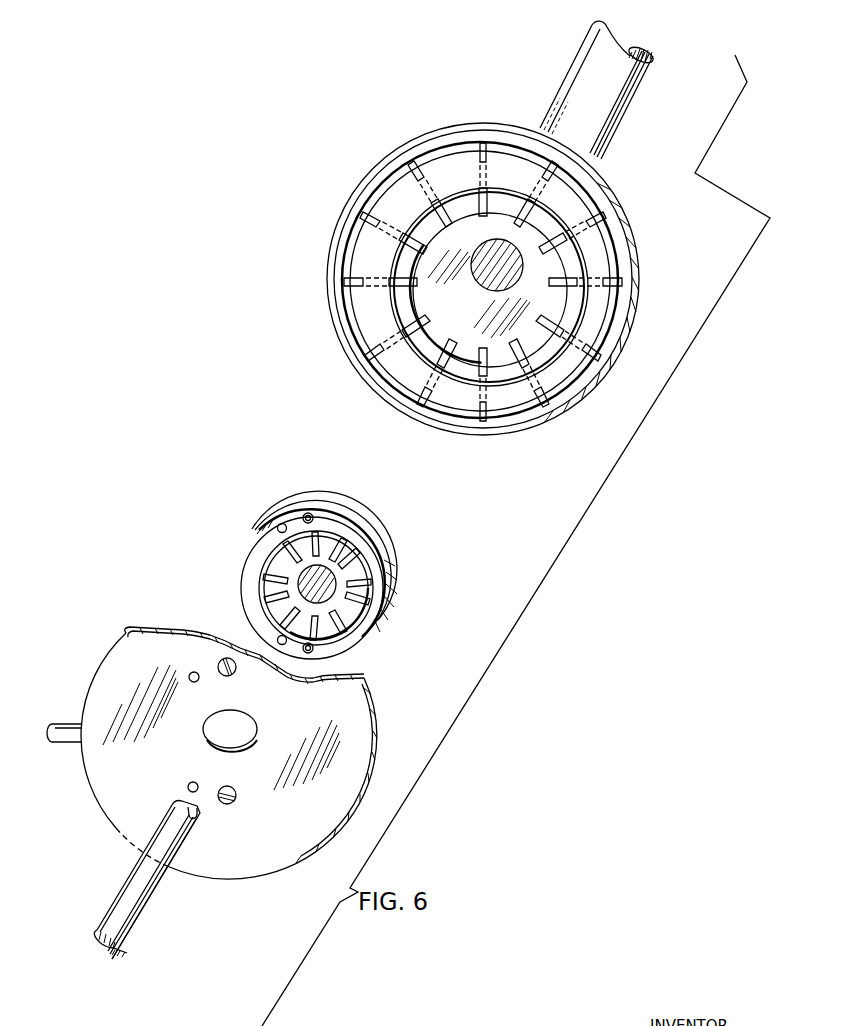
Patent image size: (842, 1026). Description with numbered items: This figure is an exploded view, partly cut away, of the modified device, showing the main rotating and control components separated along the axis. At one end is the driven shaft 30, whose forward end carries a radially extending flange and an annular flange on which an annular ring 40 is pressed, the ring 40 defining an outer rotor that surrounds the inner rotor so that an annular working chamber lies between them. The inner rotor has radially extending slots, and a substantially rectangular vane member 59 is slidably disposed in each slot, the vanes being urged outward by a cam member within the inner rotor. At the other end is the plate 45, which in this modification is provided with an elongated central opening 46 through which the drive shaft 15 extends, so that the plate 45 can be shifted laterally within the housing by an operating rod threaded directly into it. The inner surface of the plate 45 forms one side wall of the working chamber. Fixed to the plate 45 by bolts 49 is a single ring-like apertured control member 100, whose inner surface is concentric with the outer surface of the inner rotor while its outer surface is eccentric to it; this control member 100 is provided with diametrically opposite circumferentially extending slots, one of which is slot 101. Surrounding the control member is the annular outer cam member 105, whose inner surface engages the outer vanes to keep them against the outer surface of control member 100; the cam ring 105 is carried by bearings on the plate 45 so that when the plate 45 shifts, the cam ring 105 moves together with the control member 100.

The driven shaft 30 is at (641, 85).
The outer cam member 105 is at (625, 270).
The annular ring 40 is at (567, 373).
The circumferentially extending slot 101 is at (377, 530).
The ring-like apertured control member 100 is at (388, 560).
The vane member 59 is at (355, 612).
The bolts 49 is at (235, 668).
The central opening 46 is at (241, 752).
The plate 45 is at (327, 830).
The drive shaft 15 is at (160, 896).